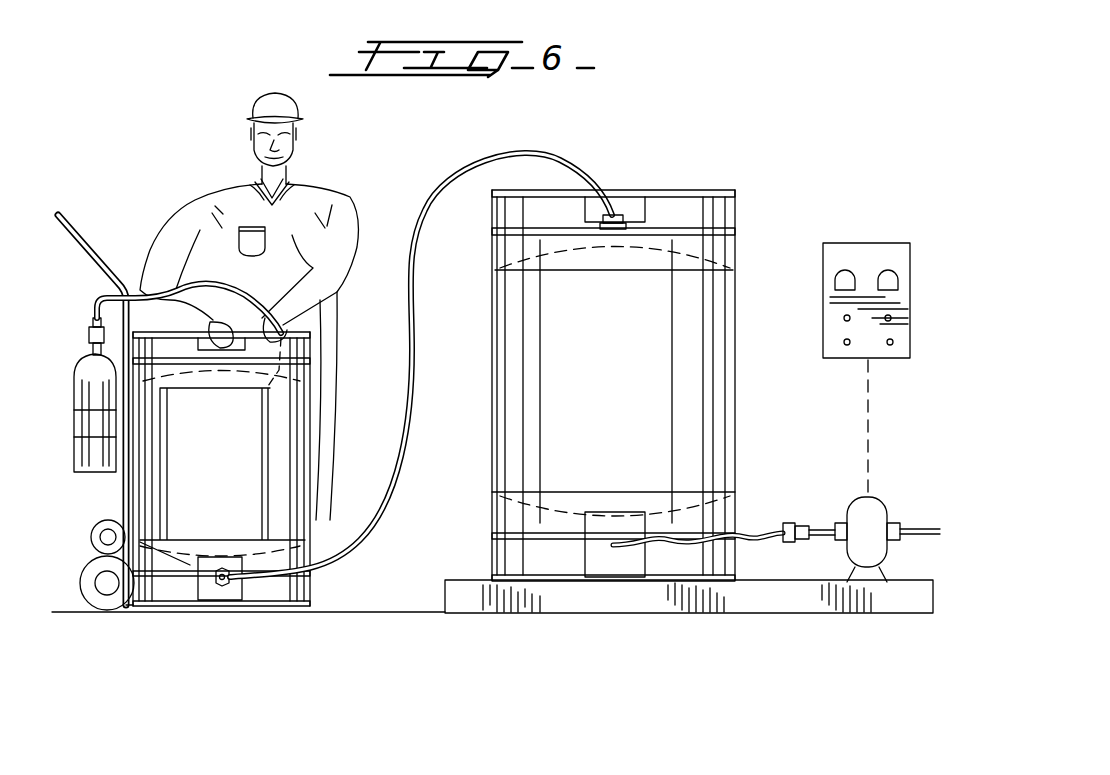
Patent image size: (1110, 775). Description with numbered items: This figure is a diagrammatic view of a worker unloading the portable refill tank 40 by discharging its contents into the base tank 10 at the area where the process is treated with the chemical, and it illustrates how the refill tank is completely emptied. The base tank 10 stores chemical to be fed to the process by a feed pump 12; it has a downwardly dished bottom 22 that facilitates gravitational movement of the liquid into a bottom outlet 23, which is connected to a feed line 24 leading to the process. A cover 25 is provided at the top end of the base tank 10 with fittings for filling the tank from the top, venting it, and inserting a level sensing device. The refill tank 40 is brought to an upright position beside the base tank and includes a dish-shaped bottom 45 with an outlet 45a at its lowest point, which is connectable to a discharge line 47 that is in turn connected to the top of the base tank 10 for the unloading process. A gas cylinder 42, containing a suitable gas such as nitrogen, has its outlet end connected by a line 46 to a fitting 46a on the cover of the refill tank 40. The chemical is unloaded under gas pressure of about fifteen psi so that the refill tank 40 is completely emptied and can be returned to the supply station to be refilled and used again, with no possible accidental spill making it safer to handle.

The base tank 10 is at (728, 368).
The feed pump 12 is at (872, 515).
The downwardly dished bottom 22 is at (545, 515).
The bottom outlet 23 is at (615, 555).
The feed line 24 is at (762, 530).
The cover 25 is at (652, 237).
The refill tank 40 is at (290, 497).
The gas cylinder 42 is at (78, 452).
The dish-shaped bottom 45 is at (180, 587).
The outlet 45a is at (231, 584).
The line 46 is at (275, 330).
The fitting 46a is at (313, 362).
The discharge line 47 is at (405, 447).